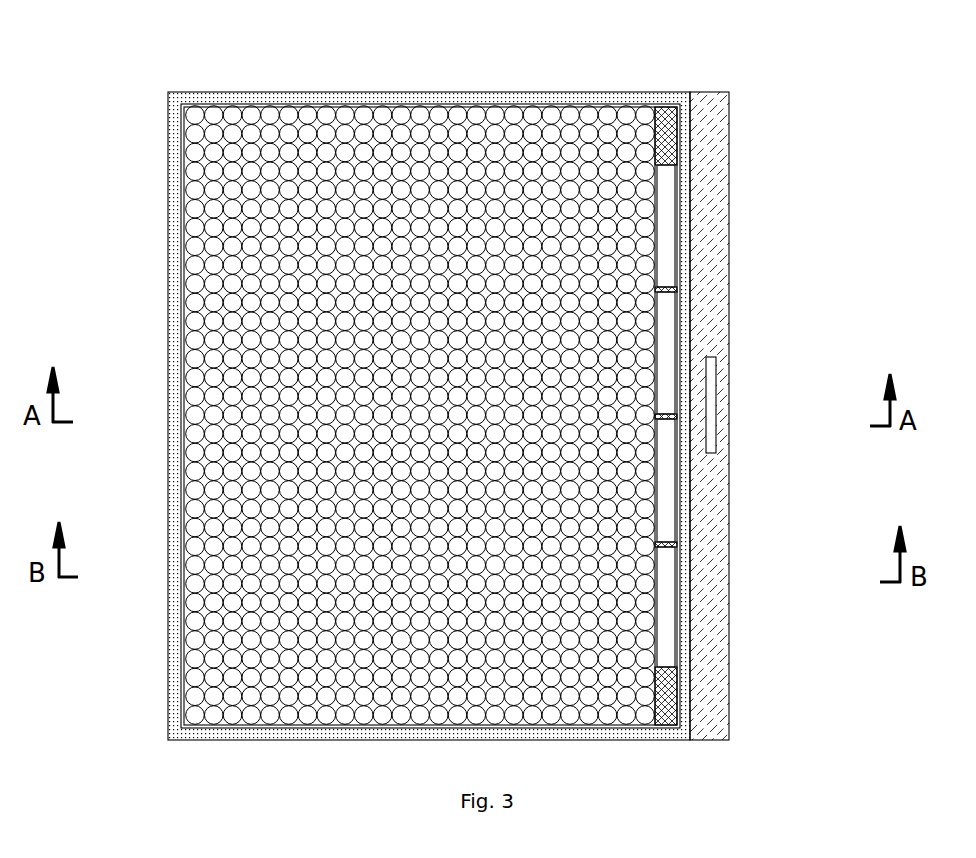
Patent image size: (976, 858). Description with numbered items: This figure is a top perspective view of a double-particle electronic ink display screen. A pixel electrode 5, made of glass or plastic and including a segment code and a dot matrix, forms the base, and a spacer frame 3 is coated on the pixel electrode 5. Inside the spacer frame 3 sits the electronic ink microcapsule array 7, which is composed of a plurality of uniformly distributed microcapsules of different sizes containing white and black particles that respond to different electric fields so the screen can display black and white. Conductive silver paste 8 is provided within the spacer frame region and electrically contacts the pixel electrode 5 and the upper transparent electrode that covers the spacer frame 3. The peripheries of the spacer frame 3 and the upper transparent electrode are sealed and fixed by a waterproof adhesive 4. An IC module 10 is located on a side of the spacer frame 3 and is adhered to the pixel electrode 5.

The spacer frame 3 is at (426, 416).
The waterproof adhesive 4 is at (422, 416).
The pixel electrode 5 is at (752, 416).
The electronic ink microcapsule array 7 is at (420, 372).
The conductive silver paste 8 is at (731, 417).
The IC module 10 is at (755, 366).